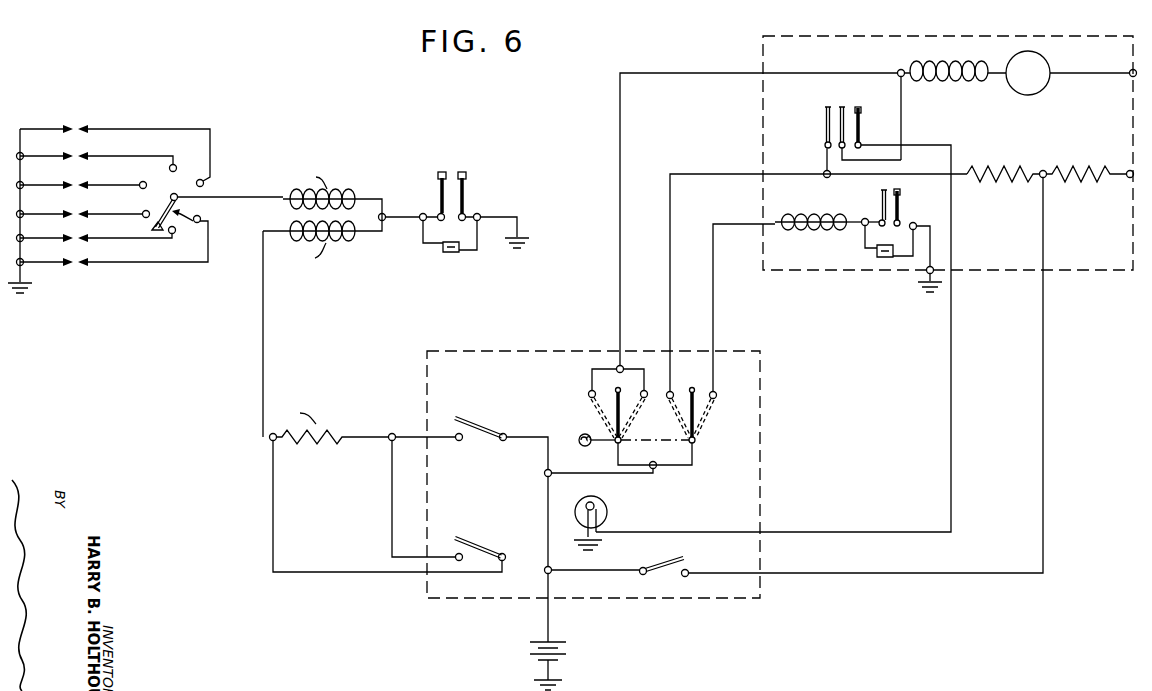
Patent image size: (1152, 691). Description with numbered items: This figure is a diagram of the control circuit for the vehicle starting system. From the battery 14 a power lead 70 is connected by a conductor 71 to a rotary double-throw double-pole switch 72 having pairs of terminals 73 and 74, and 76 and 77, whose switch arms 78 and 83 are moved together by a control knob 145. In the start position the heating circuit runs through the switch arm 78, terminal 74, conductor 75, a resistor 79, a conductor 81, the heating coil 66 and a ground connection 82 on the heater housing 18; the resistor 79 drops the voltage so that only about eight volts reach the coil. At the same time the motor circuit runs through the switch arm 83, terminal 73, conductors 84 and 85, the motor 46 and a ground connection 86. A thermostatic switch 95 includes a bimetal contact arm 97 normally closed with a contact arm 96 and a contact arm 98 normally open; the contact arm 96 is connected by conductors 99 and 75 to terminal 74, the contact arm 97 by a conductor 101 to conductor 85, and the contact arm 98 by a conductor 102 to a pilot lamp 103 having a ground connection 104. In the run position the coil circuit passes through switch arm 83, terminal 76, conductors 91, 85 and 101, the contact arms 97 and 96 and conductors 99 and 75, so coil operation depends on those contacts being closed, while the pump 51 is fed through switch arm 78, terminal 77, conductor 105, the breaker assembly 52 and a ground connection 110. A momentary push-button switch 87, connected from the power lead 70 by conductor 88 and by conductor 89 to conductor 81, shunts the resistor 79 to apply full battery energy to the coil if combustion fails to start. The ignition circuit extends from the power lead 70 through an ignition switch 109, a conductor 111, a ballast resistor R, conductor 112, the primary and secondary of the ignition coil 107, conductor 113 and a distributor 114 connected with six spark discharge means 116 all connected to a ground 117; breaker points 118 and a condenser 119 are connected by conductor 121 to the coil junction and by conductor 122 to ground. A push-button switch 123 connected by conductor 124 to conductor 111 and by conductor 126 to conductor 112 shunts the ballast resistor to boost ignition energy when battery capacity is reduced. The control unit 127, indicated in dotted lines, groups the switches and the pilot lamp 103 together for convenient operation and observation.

The battery 14 is at (566, 655).
The heater housing 18 is at (1068, 272).
The motor 46 is at (1028, 52).
The pump 51 is at (829, 232).
The breaker assembly 52 is at (910, 223).
The heating coil 66 is at (1100, 171).
The power lead 70 is at (548, 516).
The conductor 71 is at (644, 474).
The double-throw double-pole switch 72 is at (667, 434).
The terminal 73 is at (589, 394).
The terminal 74 is at (672, 393).
The conductor 75 is at (723, 173).
The terminal 76 is at (628, 409).
The terminal 77 is at (716, 393).
The switch arm 78 is at (700, 433).
The resistor 79 is at (1008, 171).
The conductor 81 is at (1045, 171).
The ground connection 82 is at (1130, 180).
The switch arm 83 is at (600, 434).
The conductor 84 is at (617, 366).
The conductor 85 is at (658, 73).
The ground connection 86 is at (1129, 73).
The momentary switch 87 is at (684, 563).
The conductor 88 is at (590, 571).
The conductor 89 is at (1043, 364).
The conductor 91 is at (643, 366).
The thermostatic switch 95 is at (837, 95).
The contact arm 96 is at (826, 108).
The bimetal contact arm 97 is at (870, 124).
The contact arm 98 is at (860, 119).
The conductor 99 is at (824, 171).
The conductor 101 is at (902, 133).
The conductor 102 is at (951, 364).
The pilot lamp 103 is at (598, 512).
The ground connection 104 is at (596, 540).
The conductor 105 is at (716, 318).
The ignition coil 107 is at (392, 170).
The ignition switch 109 is at (508, 414).
The ground connection 110 is at (927, 275).
The conductor 111 is at (412, 434).
The conductor 112 is at (263, 362).
The conductor 113 is at (247, 197).
The distributor 114 is at (199, 224).
The spark discharge means 116 is at (76, 127).
The ground 117 is at (20, 217).
The breaker points 118 is at (466, 182).
The condenser 119 is at (462, 254).
The conductor 121 is at (410, 220).
The conductor 122 is at (514, 214).
The push-button switch 123 is at (504, 530).
The conductor 124 is at (392, 512).
The conductor 126 is at (273, 515).
The control unit (dashed enclosure) 127 is at (766, 452).
The control knob 145 is at (593, 449).